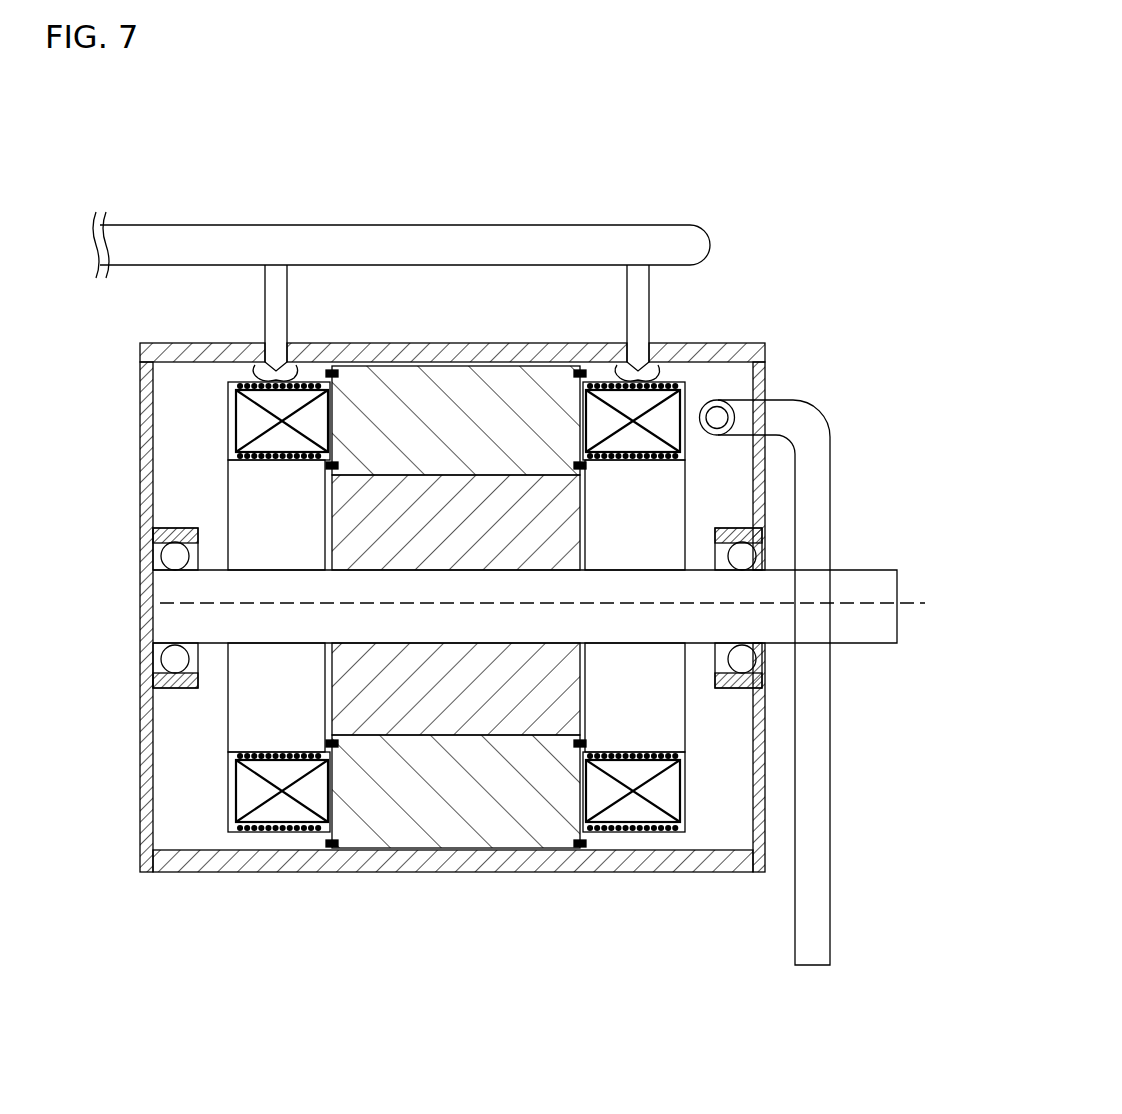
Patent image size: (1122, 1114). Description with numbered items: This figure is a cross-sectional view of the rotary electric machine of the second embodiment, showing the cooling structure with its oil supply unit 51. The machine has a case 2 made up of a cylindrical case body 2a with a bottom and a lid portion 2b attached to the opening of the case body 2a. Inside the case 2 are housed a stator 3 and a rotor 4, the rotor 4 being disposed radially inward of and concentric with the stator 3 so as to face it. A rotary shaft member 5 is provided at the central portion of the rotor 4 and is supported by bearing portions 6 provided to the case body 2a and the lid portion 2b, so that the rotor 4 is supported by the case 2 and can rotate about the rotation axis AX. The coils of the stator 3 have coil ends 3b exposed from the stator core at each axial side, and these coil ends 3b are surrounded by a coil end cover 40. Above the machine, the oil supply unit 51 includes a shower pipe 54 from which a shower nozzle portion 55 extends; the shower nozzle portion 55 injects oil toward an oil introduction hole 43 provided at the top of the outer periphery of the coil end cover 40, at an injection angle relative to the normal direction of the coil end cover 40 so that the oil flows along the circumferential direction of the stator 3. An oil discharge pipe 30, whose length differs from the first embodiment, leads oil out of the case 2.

The oil supply unit 51 is at (181, 201).
The shower pipe 54 is at (444, 225).
The shower nozzle portion 55 is at (288, 278).
The case 2 is at (465, 551).
The case body 2a is at (718, 343).
The lid portion 2b is at (677, 292).
The stator 3 is at (472, 563).
The coil end 3b is at (240, 382).
The coil end cover 40 is at (230, 405).
The oil introduction hole 43 is at (292, 372).
The rotor 4 is at (585, 700).
The rotary shaft member 5 is at (853, 568).
The bearing portion 6 is at (170, 682).
The oil discharge pipe 30 is at (818, 410).
The rotation axis AX is at (560, 603).